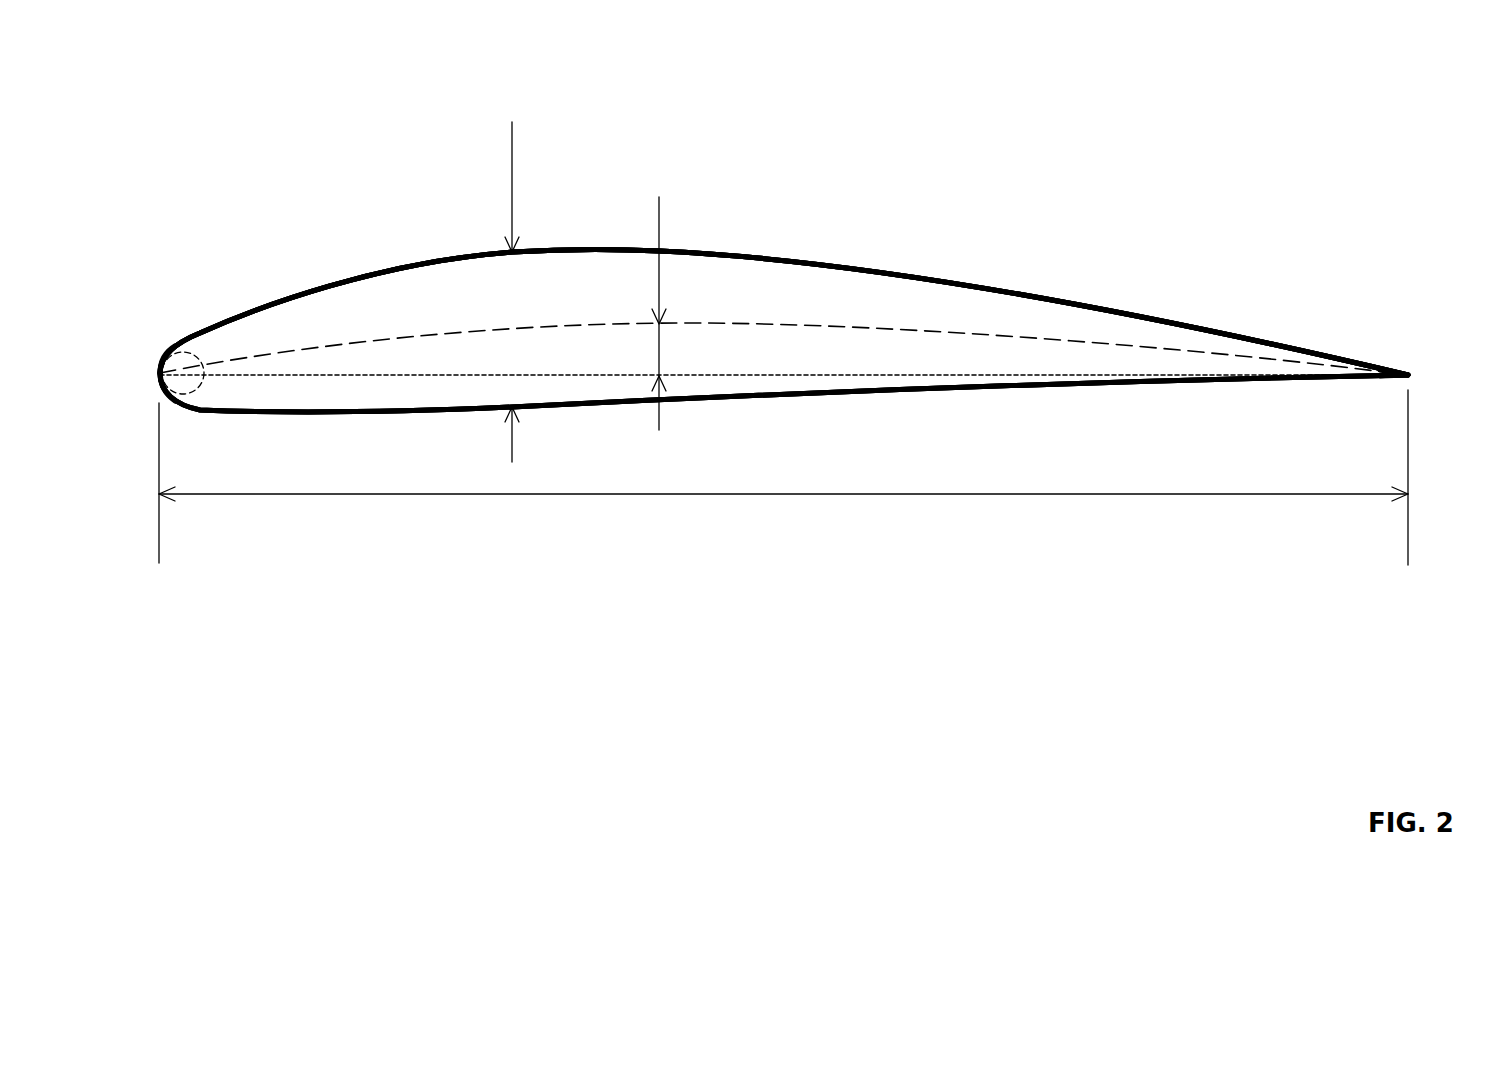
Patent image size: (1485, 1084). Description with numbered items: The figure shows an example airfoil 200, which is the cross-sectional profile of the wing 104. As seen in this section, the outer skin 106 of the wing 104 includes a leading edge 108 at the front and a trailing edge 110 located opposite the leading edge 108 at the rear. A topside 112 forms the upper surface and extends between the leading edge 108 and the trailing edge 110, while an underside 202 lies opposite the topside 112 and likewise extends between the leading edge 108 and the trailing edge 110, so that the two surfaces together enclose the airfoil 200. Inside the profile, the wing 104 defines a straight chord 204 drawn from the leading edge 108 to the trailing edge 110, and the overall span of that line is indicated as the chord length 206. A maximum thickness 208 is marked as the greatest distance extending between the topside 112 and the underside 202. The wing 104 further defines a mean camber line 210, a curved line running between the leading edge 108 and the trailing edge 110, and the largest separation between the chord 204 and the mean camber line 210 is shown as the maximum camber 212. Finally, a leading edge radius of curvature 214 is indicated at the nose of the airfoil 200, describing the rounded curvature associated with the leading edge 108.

The airfoil 200 is at (943, 80).
The wing 104 is at (943, 120).
The outer skin 106 is at (368, 268).
The leading edge 108 is at (158, 373).
The trailing edge 110 is at (1403, 373).
The topside 112 is at (455, 256).
The underside 202 is at (558, 406).
The chord 204 is at (835, 373).
The chord length 206 is at (930, 494).
The maximum thickness 208 is at (512, 150).
The mean camber line 210 is at (960, 333).
The maximum camber 212 is at (659, 215).
The leading edge radius of curvature 214 is at (203, 352).